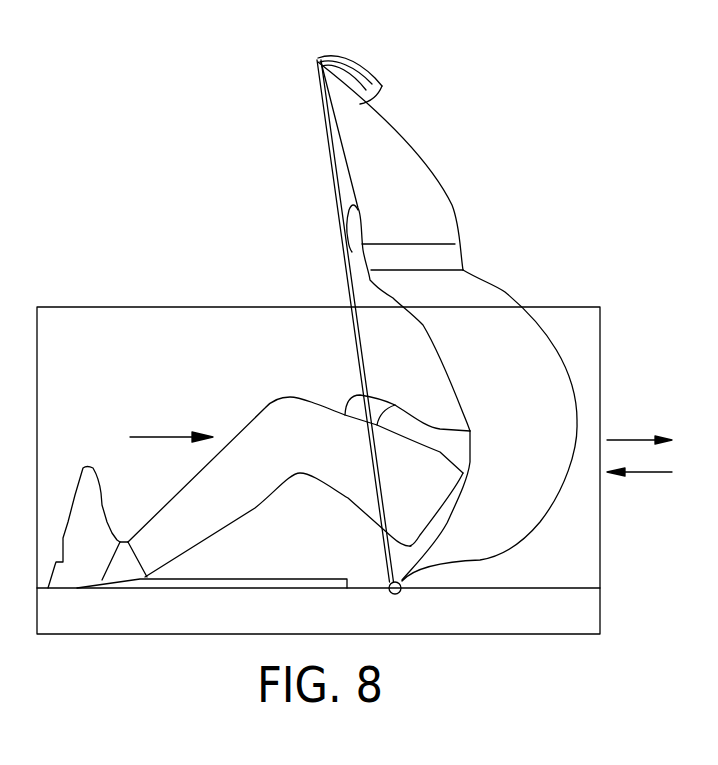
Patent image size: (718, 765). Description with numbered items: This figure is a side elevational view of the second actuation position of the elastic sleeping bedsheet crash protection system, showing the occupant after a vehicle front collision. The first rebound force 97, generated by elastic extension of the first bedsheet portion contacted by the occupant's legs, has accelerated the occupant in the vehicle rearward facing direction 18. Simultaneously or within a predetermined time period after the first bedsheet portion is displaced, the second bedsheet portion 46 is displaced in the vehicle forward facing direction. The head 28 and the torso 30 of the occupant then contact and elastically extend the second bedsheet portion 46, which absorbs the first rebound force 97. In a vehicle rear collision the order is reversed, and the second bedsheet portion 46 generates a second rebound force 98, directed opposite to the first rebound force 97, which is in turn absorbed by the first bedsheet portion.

The vehicle rearward facing direction 18 is at (626, 440).
The head 28 is at (346, 236).
The torso 30 is at (445, 379).
The second bedsheet portion 46 is at (547, 377).
The first rebound force 97 is at (163, 437).
The second rebound force 98 is at (648, 472).